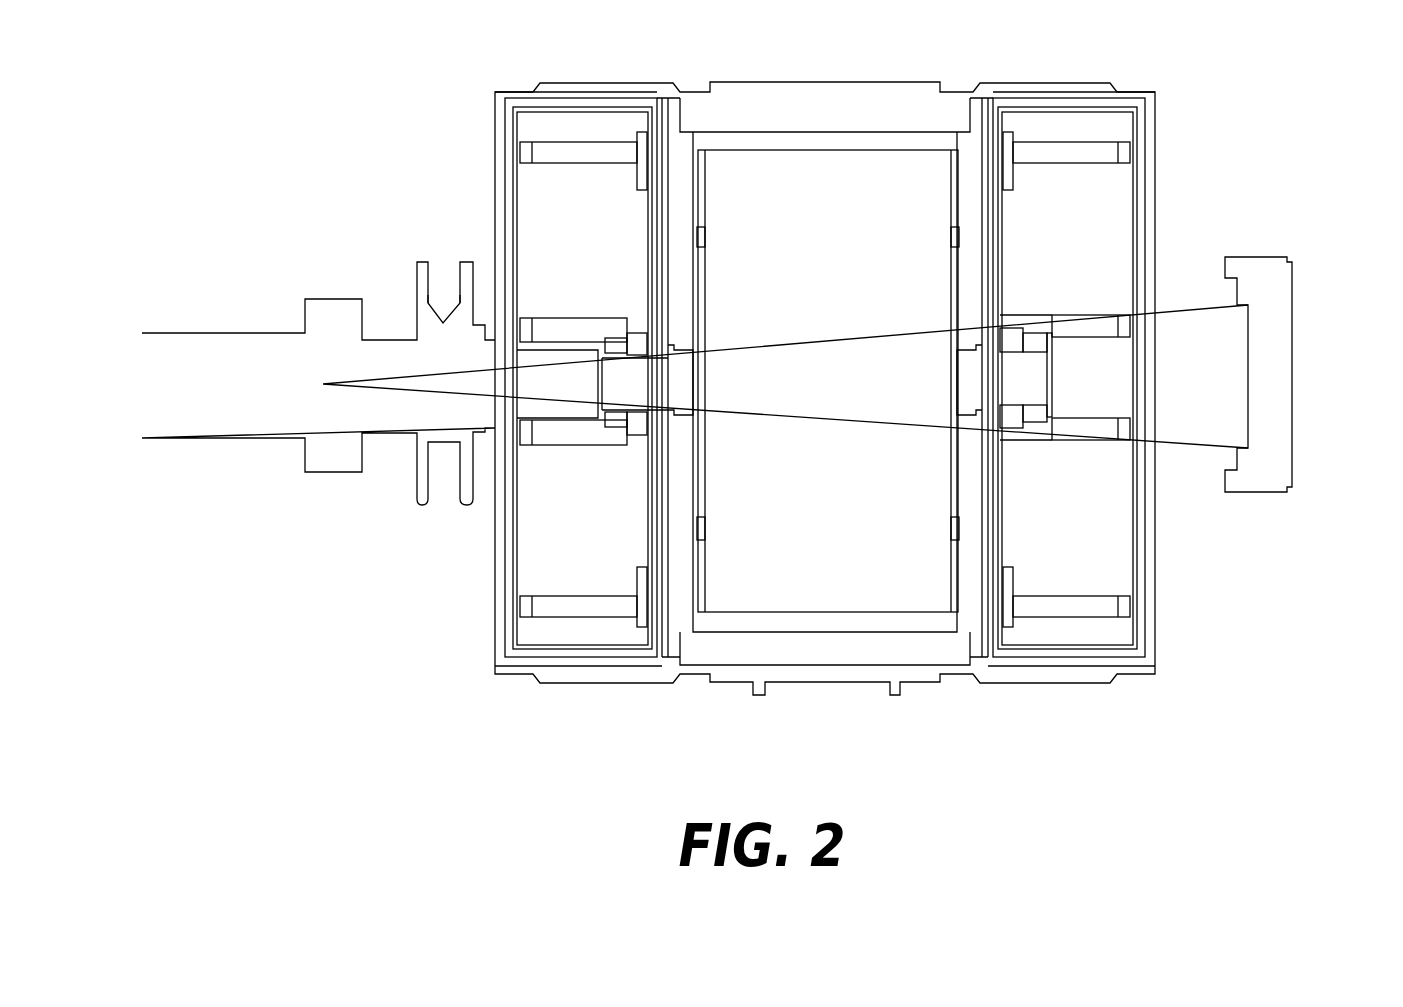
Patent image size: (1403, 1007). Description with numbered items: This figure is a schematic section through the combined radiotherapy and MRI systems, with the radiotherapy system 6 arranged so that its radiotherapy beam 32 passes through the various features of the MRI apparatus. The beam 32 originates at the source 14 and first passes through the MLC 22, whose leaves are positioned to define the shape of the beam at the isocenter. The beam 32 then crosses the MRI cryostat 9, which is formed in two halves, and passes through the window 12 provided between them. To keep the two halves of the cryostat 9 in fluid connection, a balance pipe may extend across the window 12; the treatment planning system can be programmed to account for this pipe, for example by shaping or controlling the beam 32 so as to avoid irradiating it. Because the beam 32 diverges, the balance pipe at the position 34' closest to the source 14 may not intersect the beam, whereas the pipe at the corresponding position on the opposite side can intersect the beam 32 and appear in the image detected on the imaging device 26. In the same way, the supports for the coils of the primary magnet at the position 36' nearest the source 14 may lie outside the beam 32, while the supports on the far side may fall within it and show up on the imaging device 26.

The radiotherapy system 6 is at (262, 498).
The source 14 is at (245, 333).
The MLC 22 is at (422, 262).
The window 12 is at (541, 355).
The cryostat 9 is at (527, 550).
The balance pipe position closest to the source 34' is at (525, 447).
The coil support position closest to the source 36' is at (624, 232).
The radiotherapy beam 32 is at (776, 345).
The imaging device 26 is at (1272, 290).